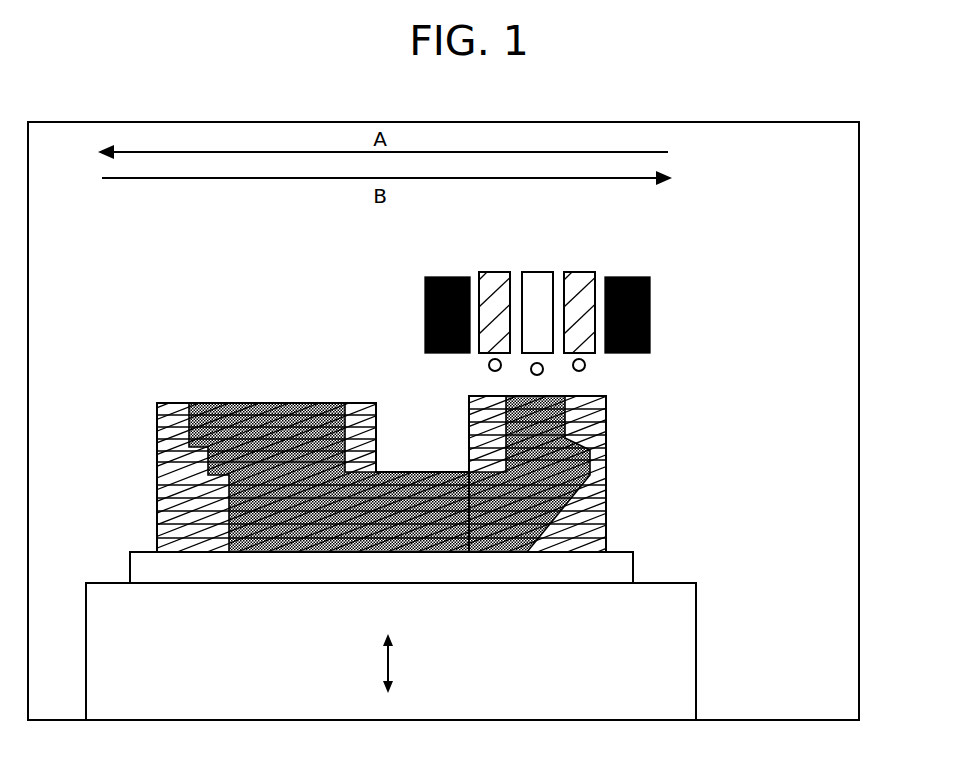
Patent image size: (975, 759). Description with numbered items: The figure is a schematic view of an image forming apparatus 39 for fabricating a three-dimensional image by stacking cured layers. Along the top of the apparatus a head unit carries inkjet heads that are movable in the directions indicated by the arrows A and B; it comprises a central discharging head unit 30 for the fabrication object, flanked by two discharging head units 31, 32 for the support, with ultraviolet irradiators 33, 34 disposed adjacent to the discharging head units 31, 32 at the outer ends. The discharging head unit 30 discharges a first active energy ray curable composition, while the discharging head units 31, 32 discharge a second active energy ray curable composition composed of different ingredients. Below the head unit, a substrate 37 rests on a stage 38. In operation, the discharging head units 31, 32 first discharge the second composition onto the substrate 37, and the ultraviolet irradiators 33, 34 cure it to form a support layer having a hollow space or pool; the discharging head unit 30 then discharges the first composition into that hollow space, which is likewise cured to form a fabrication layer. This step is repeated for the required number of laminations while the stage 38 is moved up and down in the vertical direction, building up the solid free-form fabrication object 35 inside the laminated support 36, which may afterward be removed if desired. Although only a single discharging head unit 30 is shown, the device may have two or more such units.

The discharging head unit for fabrication 30 is at (539, 272).
The discharging head unit for support 31 is at (497, 272).
The discharging head unit for support 32 is at (581, 272).
The ultraviolet irradiator 33 is at (425, 296).
The ultraviolet irradiator 34 is at (650, 296).
The solid free-form fabrication object 35 is at (283, 393).
The laminated support 36 is at (616, 423).
The substrate 37 is at (633, 565).
The stage 38 is at (696, 592).
The image forming apparatus 39 is at (859, 143).